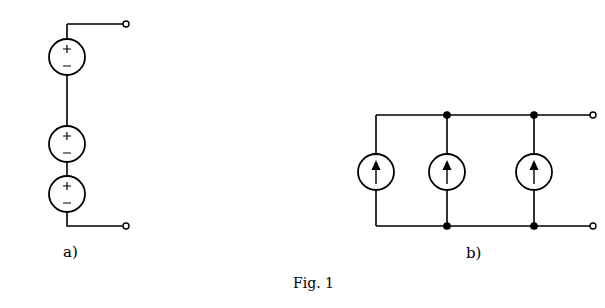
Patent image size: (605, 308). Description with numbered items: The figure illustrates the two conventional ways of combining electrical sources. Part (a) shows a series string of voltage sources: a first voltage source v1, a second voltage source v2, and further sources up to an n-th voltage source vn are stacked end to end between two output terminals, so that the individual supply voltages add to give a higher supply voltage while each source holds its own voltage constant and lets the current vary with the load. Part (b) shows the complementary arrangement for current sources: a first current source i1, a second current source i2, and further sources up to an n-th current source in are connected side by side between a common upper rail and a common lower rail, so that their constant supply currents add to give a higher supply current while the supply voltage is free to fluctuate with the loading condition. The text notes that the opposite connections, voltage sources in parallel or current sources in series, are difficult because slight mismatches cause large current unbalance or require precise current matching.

The voltage source vn is at (54, 57).
The voltage source v2 is at (54, 144).
The voltage source v1 is at (54, 194).
The current source i1 is at (368, 172).
The current source i2 is at (438, 172).
The current source in is at (526, 172).